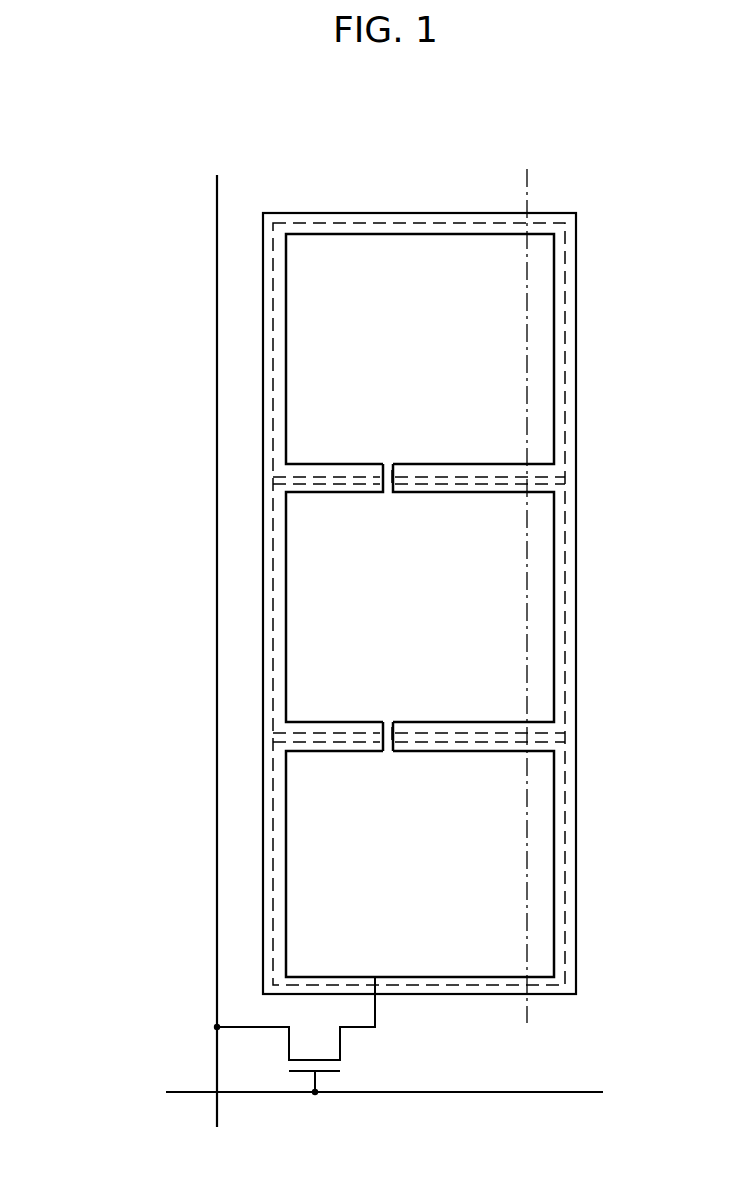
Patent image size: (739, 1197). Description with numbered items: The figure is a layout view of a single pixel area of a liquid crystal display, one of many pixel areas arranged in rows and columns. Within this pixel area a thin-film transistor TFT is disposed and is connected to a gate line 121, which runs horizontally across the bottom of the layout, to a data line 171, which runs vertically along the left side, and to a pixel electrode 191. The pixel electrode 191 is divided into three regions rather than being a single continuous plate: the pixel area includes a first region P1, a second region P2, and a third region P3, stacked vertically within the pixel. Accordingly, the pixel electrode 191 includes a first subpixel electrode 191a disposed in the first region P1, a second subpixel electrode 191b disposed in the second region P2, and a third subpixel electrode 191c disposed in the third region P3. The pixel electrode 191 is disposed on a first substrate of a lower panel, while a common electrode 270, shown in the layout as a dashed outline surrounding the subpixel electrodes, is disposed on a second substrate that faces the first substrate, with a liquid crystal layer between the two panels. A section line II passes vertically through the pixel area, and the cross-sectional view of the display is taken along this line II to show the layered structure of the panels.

The data line 171 is at (217, 323).
The gate line 121 is at (483, 1093).
The thin-film transistor TFT is at (372, 1054).
The common electrode 270 is at (576, 320).
The pixel electrode 191 is at (368, 605).
The first subpixel electrode 191a is at (554, 907).
The second subpixel electrode 191b is at (554, 658).
The third subpixel electrode 191c is at (554, 415).
The first region P1 is at (565, 837).
The second region P2 is at (565, 555).
The third region P3 is at (566, 277).
The line II- II is at (527, 169).